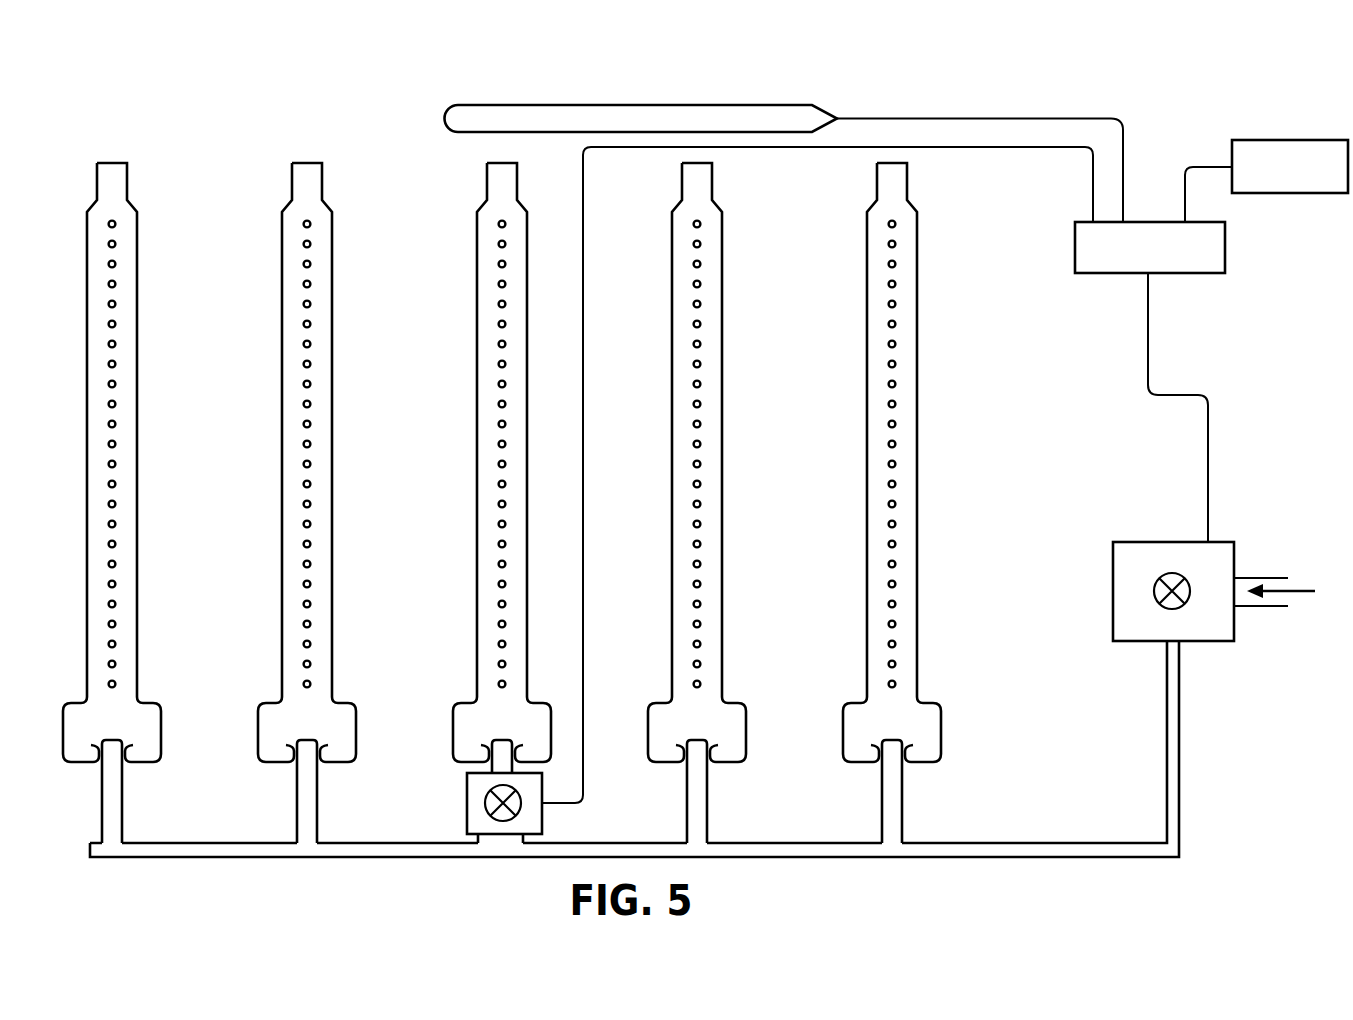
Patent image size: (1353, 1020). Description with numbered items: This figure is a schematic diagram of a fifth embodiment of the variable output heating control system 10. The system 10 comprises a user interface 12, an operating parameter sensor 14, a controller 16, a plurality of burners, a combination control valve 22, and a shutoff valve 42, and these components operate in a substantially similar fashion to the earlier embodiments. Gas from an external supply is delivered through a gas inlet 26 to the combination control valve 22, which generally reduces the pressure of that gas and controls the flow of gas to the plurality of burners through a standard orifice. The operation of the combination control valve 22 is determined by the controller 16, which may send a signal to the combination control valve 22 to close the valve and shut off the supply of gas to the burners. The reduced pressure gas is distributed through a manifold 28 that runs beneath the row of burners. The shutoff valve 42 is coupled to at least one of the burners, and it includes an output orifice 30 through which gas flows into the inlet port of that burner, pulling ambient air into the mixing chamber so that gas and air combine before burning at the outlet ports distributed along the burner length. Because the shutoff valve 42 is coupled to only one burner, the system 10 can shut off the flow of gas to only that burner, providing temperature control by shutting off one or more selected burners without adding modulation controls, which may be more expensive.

The variable output heating control system 10 is at (1102, 75).
The user interface 12 is at (1312, 195).
The operating parameter sensor 14 is at (454, 118).
The controller 16 is at (1198, 274).
The combination control valve 22 is at (1133, 542).
The gas inlet 26 is at (1262, 607).
The manifold 28 is at (1180, 825).
The output orifice 30 is at (477, 724).
The shutoff valve 42 is at (755, 495).